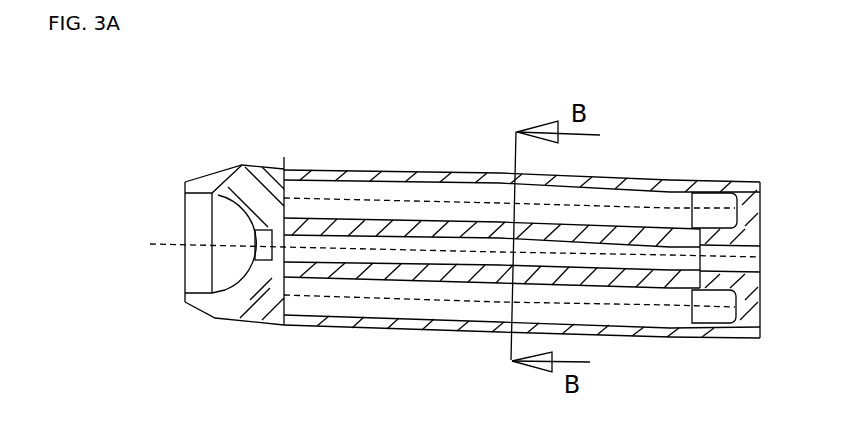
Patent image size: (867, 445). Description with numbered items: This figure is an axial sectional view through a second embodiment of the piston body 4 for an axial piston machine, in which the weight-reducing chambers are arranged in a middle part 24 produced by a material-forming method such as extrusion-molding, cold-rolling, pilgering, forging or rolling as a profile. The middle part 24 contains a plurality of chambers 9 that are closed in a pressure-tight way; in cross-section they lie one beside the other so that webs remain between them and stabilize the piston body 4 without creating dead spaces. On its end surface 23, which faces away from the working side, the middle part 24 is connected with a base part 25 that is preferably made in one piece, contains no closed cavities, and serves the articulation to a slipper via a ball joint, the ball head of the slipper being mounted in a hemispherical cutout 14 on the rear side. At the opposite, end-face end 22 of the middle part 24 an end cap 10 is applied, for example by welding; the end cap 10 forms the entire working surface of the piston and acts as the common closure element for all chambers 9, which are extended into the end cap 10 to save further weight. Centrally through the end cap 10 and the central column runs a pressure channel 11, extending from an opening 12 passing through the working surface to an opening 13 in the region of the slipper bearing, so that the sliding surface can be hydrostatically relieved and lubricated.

The piston body 4 is at (468, 123).
The chambers 9 is at (348, 297).
The end cap 10 is at (753, 187).
The pressure channel 11 is at (563, 252).
The opening 12 is at (762, 260).
The opening 13 is at (253, 258).
The hemispherical cutout 14 is at (225, 228).
The end-face end 22 is at (687, 165).
The end surface 23 is at (268, 288).
The middle part 24 is at (447, 330).
The base part 25 is at (252, 172).